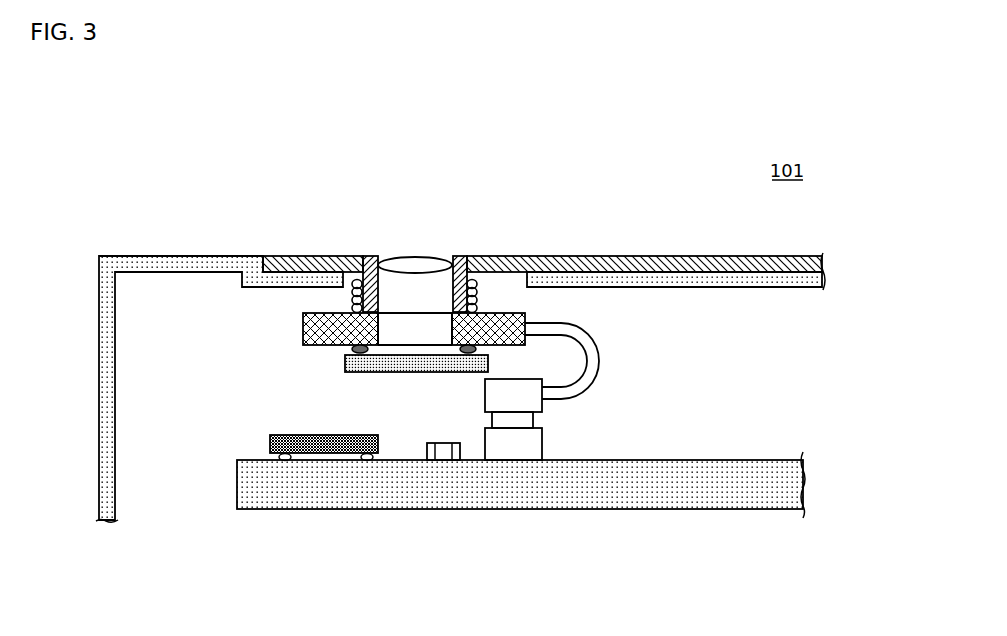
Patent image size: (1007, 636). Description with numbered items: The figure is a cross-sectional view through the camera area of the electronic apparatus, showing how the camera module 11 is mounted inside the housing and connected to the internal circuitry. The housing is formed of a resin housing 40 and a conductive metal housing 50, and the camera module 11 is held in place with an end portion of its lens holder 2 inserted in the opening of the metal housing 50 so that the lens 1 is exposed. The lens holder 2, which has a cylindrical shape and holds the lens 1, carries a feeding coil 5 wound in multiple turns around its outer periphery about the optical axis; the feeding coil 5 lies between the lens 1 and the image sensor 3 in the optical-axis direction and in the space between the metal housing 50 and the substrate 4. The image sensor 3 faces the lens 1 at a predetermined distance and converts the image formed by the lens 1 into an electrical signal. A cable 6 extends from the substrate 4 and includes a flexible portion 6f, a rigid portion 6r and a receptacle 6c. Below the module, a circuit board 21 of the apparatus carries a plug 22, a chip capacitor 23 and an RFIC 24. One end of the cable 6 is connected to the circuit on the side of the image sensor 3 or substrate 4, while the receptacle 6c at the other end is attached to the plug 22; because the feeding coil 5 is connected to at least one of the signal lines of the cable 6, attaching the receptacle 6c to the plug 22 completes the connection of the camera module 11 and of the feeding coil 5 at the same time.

The lens 1 is at (418, 257).
The lens holder 2 is at (460, 257).
The image sensor 3 is at (410, 373).
The substrate 4 is at (303, 328).
The feeding coil 5 is at (478, 297).
The cable 6 is at (565, 377).
The flexible portion 6f is at (592, 364).
The rigid portion 6r is at (562, 400).
The receptacle 6c is at (544, 420).
The camera module 11 is at (298, 362).
The circuit board 21 is at (713, 470).
The plug 22 is at (533, 446).
The chip capacitor 23 is at (443, 443).
The RFIC 24 is at (323, 435).
The resin housing 40 is at (188, 258).
The metal housing 50 is at (630, 257).